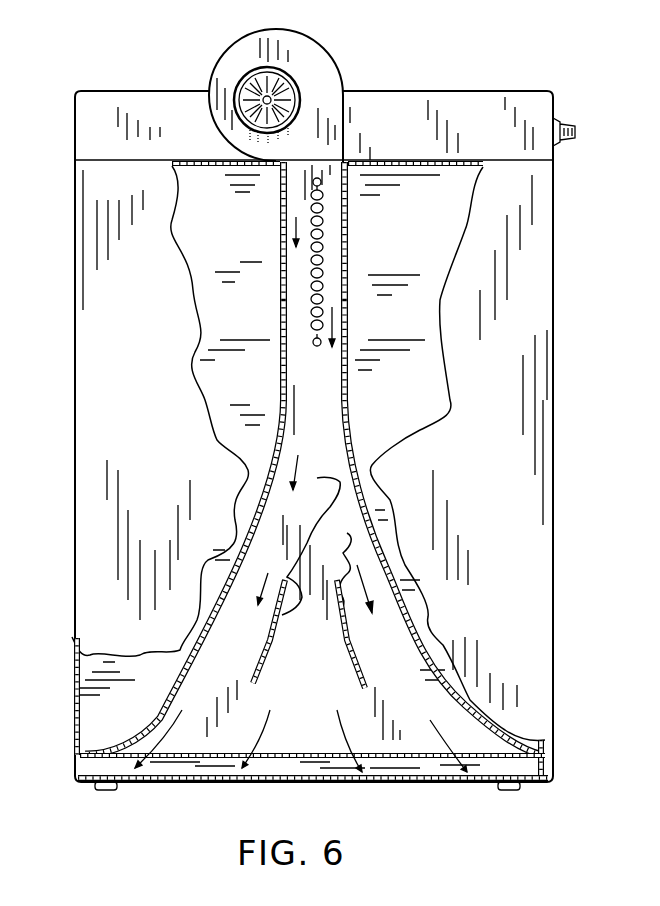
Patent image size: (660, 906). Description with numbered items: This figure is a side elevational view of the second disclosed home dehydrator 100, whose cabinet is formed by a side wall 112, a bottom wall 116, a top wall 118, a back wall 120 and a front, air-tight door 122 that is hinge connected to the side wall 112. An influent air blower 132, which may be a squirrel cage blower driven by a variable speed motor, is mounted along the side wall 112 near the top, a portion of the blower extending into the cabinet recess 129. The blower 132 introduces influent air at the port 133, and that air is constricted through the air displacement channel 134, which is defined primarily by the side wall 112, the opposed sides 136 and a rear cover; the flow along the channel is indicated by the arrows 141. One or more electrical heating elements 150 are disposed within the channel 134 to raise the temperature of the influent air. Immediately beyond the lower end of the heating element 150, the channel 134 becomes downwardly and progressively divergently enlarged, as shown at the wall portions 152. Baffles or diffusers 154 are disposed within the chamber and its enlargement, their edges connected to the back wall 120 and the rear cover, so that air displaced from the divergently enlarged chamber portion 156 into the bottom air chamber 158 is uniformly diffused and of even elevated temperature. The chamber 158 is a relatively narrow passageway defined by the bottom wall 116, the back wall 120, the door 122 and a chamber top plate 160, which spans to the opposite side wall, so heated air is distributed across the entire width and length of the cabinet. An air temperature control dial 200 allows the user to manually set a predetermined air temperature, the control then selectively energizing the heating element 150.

The home dehydrator 100 is at (482, 75).
The side wall 112 is at (150, 394).
The bottom wall 116 is at (378, 783).
The top wall 118 is at (112, 92).
The back wall 120 is at (73, 418).
The front air-tight door 122 is at (553, 290).
The cabinet recess 129 is at (414, 146).
The influent air blower 132 is at (250, 76).
The port 133 is at (340, 58).
The air displacement channel 134 is at (335, 376).
The opposed sides 136 is at (280, 210).
The arrows 141 is at (293, 227).
The electrical heating element 150 is at (318, 265).
The wall portions 152 is at (196, 680).
The baffles or diffusers 154 is at (347, 533).
The divergently enlarged chamber portion 156 is at (343, 657).
The bottom air chamber 158 is at (168, 768).
The chamber top plate 160 is at (252, 758).
The air temperature control dial 200 is at (576, 133).